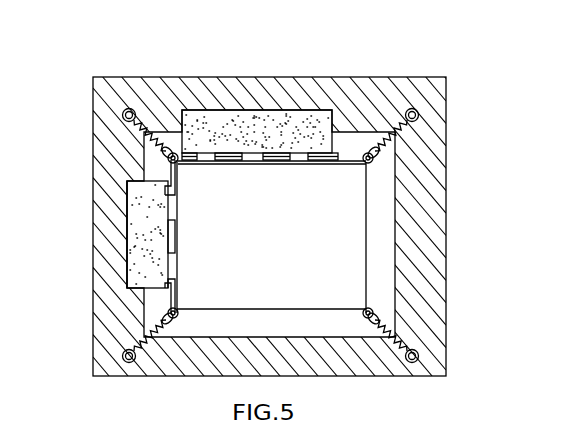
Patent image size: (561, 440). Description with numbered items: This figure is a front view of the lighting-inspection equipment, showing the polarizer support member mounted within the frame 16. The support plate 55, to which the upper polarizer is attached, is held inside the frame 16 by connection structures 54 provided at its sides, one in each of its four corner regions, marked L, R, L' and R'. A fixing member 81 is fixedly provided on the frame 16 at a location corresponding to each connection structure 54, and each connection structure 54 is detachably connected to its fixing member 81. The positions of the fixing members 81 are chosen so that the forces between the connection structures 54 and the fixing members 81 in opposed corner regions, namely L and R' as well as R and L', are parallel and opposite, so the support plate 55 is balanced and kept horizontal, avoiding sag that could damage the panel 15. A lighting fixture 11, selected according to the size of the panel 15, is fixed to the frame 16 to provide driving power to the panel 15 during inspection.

The lighting fixture 11 is at (272, 132).
The panel 15 is at (127, 184).
The frame 16 is at (118, 284).
The connection structure 54 is at (168, 162).
The support plate 55 is at (345, 226).
The fixing member 81 is at (122, 115).